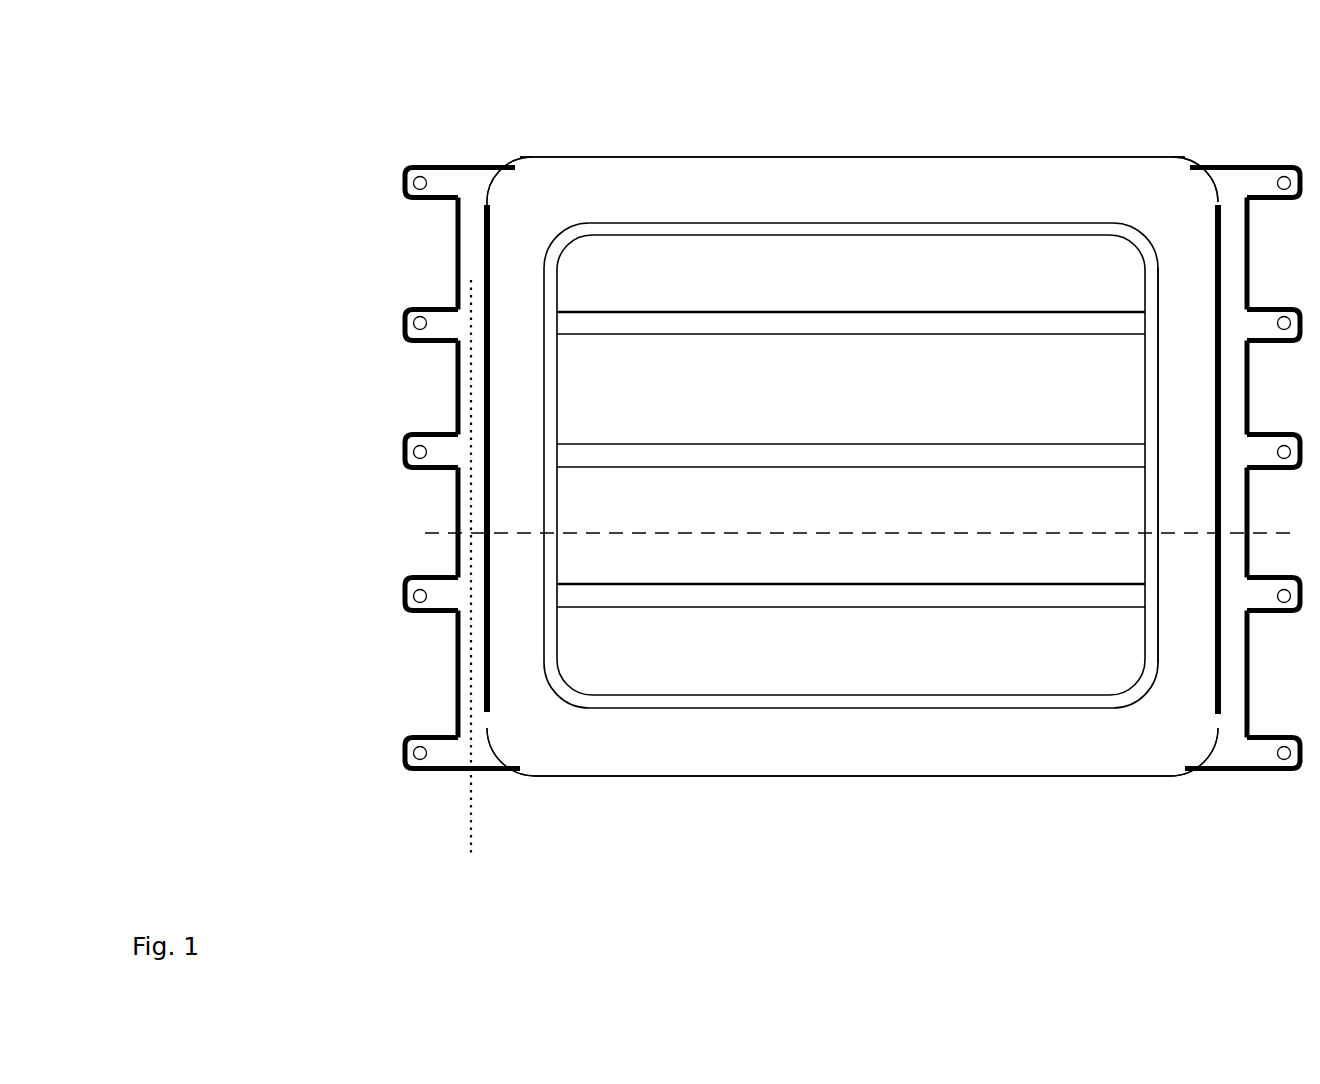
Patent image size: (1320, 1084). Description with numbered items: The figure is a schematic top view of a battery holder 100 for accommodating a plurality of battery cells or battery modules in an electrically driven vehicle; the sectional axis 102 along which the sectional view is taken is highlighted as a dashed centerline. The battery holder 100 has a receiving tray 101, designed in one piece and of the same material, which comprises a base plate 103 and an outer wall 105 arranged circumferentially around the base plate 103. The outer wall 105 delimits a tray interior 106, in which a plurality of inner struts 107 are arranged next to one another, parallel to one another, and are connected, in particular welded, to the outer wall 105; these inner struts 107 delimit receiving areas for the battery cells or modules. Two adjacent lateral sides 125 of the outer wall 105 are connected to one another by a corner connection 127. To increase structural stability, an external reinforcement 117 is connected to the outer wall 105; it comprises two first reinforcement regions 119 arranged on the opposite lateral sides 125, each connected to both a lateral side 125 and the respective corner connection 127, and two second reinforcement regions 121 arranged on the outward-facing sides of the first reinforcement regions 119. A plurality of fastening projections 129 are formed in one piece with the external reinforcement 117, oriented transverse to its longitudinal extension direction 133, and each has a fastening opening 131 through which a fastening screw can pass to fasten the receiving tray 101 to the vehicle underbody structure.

The battery holder 100 is at (250, 182).
The receiving tray 101 is at (943, 167).
The sectional axis 102 is at (987, 532).
The base plate 103 is at (873, 660).
The outer wall 105 is at (1202, 477).
The tray interior 106 is at (965, 415).
The inner struts 107 is at (750, 325).
The external reinforcement 117 is at (821, 406).
The first reinforcement region 119 is at (821, 424).
The second reinforcement region 121 is at (475, 180).
The lateral sides 125 is at (812, 158).
The corner connection 127 is at (517, 167).
The fastening projections 129 is at (418, 312).
The fastening opening 131 is at (420, 322).
The longitudinal extension direction 133 is at (468, 820).